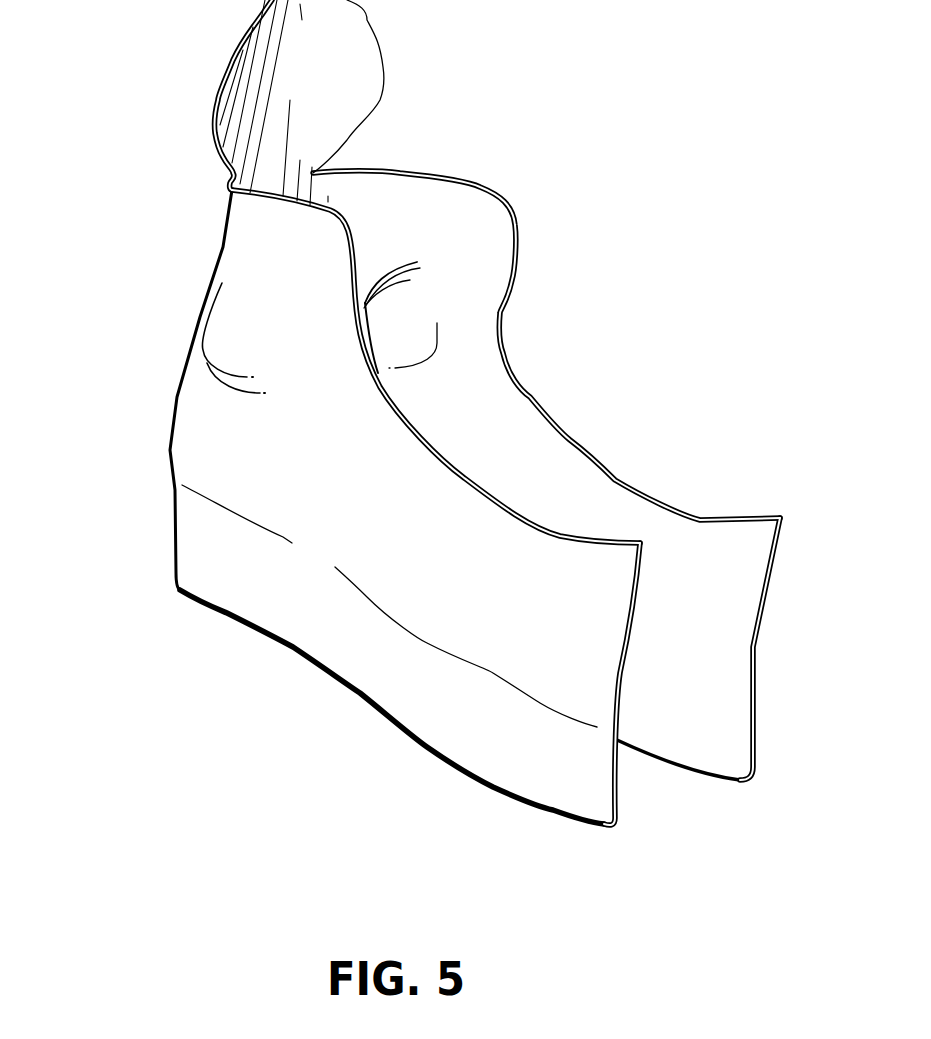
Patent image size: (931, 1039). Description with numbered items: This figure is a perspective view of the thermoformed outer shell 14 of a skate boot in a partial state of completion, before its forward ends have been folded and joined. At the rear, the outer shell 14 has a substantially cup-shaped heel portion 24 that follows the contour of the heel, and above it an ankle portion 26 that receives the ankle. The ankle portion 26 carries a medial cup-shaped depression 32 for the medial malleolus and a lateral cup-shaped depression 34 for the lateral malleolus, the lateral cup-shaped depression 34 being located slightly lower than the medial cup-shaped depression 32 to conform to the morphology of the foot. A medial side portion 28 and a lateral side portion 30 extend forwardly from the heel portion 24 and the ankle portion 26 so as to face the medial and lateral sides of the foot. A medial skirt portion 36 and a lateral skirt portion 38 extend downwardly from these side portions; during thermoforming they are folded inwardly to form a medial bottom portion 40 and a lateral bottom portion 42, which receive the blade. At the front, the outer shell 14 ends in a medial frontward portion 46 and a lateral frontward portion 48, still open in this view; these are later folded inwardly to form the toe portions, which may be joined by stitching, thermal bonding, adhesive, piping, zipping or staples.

The outer shell 14 is at (433, 173).
The heel portion 24 is at (173, 397).
The ankle portion 26 is at (245, 265).
The medial side portion 28 is at (575, 440).
The lateral side portion 30 is at (328, 490).
The medial cup-shaped depression 32 is at (410, 313).
The lateral cup-shaped depression 34 is at (223, 333).
The medial skirt portion 36 is at (688, 743).
The lateral skirt portion 38 is at (382, 680).
The medial bottom portion 40 is at (733, 780).
The lateral bottom portion 42 is at (557, 810).
The medial frontward portion 46 is at (720, 550).
The lateral frontward portion 48 is at (593, 630).